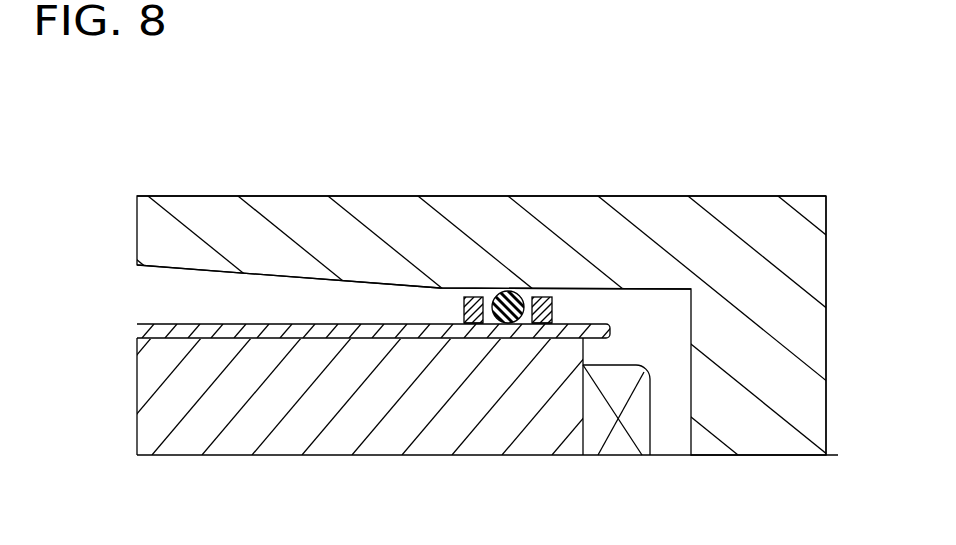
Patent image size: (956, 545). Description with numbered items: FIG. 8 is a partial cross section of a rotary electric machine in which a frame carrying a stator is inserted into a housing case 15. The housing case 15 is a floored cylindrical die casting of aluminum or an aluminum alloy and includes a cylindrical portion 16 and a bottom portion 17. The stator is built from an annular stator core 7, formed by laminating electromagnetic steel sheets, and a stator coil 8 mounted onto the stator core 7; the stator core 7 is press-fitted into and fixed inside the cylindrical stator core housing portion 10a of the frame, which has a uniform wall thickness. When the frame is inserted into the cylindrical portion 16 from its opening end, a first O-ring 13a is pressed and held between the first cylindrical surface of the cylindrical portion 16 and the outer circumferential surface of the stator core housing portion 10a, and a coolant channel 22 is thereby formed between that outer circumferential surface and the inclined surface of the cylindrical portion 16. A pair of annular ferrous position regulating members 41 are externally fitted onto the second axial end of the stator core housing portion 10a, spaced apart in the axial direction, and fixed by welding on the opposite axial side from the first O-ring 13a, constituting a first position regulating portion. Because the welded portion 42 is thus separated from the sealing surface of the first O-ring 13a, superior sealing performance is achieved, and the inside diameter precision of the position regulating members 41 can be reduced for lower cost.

The stator core 7 is at (490, 440).
The stator coil 8 is at (615, 442).
The stator core housing portion 10a is at (317, 324).
The first O-ring 13a is at (508, 291).
The housing case 15 is at (670, 192).
The cylindrical portion 16 is at (180, 207).
The bottom portion 17 is at (757, 432).
The coolant channel 22 is at (228, 284).
The position regulating members 41 is at (476, 320).
The welded portion 42 is at (462, 323).